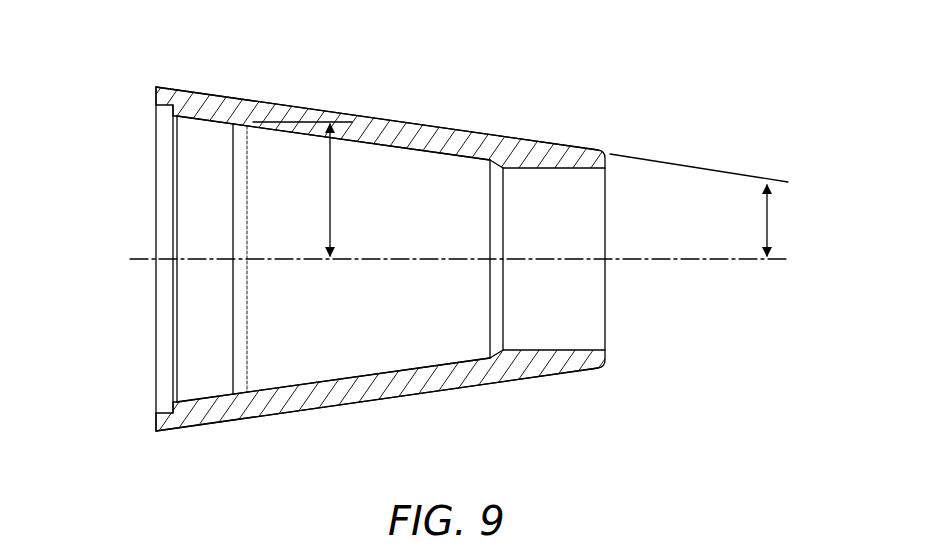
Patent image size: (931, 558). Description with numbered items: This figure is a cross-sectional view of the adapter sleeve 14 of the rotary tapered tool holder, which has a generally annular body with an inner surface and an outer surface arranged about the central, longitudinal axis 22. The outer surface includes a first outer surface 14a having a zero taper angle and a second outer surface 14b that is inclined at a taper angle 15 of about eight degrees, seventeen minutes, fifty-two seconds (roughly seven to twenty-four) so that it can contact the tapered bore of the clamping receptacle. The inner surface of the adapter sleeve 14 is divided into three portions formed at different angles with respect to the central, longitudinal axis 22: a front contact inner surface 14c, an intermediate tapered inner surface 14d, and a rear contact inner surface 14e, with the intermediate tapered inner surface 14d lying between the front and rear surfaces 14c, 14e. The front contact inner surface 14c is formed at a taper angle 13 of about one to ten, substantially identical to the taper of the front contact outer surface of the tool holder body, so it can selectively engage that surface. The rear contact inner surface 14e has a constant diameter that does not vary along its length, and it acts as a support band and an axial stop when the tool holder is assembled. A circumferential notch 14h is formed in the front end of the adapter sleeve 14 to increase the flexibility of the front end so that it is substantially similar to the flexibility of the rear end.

The adapter sleeve 14 is at (716, 88).
The first outer surface 14a is at (165, 86).
The circumferential notch 14h is at (155, 112).
The second outer surface 14b is at (297, 107).
The front contact inner surface 14c is at (200, 122).
The intermediate tapered inner surface 14d is at (362, 144).
The rear contact inner surface 14e is at (541, 168).
The taper angle 13 is at (328, 200).
The taper angle 15 is at (770, 222).
The central longitudinal axis 22 is at (705, 261).